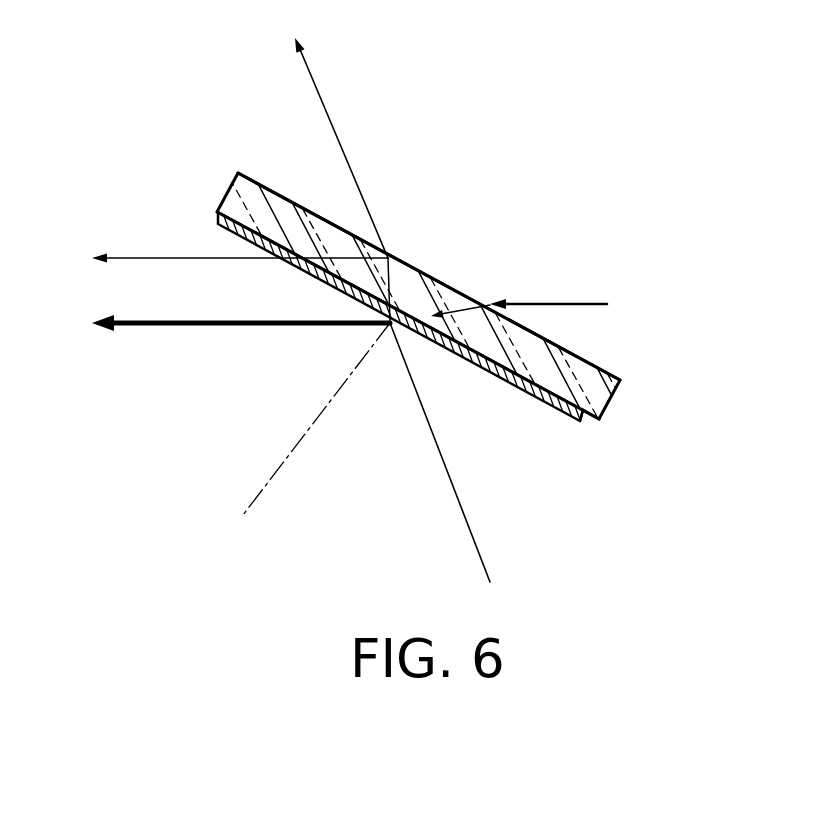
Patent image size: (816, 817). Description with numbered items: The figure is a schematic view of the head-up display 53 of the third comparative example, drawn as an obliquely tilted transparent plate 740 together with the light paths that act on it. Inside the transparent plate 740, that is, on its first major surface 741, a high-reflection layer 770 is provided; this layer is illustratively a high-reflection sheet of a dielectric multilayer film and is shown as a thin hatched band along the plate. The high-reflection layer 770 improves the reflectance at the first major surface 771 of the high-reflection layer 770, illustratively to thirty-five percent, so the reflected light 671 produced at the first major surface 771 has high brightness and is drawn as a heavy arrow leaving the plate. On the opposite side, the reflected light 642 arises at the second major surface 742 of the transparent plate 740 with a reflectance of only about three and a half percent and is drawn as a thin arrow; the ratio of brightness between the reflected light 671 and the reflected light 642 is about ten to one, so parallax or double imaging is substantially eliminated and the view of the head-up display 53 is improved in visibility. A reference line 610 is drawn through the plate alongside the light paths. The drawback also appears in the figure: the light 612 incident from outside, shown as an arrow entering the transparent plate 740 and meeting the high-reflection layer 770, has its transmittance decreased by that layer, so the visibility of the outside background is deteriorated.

The head-up display 53 is at (619, 134).
The optical axis normal line 610 is at (483, 562).
The light incident from outside 612 is at (545, 302).
The reflected light at the second major surface 642 is at (173, 257).
The reflected light at the first major surface of the high-reflection layer 671 is at (170, 327).
The transparent plate 740 is at (620, 397).
The first major surface of the transparent plate 741 is at (590, 416).
The second major surface of the transparent plate 742 is at (543, 340).
The high-reflection layer 770 is at (542, 403).
The first major surface of the high-reflection layer 771 is at (457, 356).